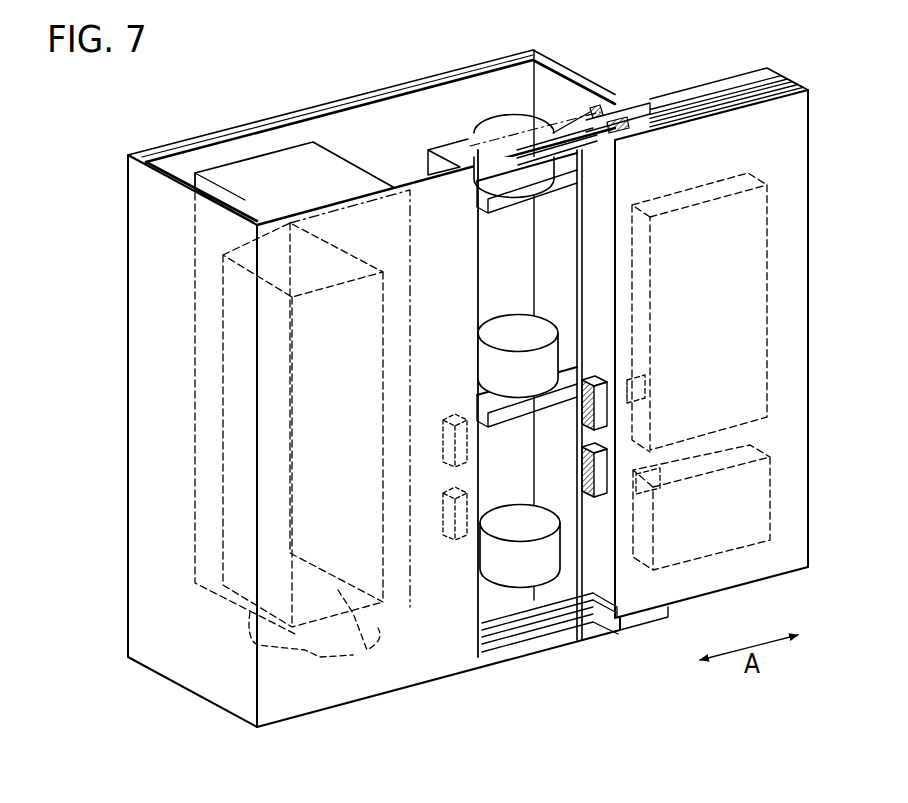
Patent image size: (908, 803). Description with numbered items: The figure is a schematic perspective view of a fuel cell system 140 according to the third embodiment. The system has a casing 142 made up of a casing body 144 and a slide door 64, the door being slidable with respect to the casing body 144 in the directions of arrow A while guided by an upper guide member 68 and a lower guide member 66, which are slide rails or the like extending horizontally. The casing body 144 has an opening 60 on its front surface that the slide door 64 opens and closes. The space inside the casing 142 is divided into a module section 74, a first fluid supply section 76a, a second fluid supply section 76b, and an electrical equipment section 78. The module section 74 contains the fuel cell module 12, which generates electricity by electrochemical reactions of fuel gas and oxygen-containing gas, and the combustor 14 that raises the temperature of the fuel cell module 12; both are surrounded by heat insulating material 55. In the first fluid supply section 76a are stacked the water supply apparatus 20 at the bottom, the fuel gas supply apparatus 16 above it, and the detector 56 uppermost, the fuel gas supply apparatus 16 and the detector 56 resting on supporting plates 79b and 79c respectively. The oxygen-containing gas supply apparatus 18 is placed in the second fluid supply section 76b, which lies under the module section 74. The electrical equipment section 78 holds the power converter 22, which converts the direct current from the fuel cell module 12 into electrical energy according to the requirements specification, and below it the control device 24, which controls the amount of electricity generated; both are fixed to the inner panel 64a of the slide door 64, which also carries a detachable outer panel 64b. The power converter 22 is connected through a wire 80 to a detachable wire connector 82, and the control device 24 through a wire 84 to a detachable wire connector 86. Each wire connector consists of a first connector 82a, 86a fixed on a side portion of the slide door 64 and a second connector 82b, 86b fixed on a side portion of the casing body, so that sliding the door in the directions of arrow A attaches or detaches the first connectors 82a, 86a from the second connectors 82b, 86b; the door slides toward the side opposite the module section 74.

The fuel cell system 140 is at (195, 97).
The casing 142 is at (108, 240).
The casing body 144 is at (467, 67).
The module section 74 is at (262, 147).
The heat insulating material 55 is at (340, 173).
The detector 56 is at (486, 126).
The first fluid supply section 76a is at (553, 84).
The second fluid supply section 76b is at (413, 608).
The guide member 68 is at (563, 108).
The slide door 64 is at (806, 70).
The inner panel 64a is at (718, 70).
The outer panel 64b is at (793, 182).
The electrical equipment section 78 is at (792, 243).
The power converter 22 is at (758, 328).
The control device 24 is at (777, 490).
The wire 80 is at (635, 372).
The wire connector 82 is at (592, 375).
The first connector 82a is at (602, 428).
The second connector 82b is at (443, 421).
The wire 84 is at (638, 473).
The wire connector 86 is at (590, 508).
The first connector 86a is at (602, 520).
The second connector 86b is at (443, 518).
The fuel cell module 12 is at (230, 371).
The combustor 14 is at (367, 652).
The fuel gas supply apparatus 16 is at (500, 330).
The oxygen-containing gas supply apparatus 18 is at (307, 652).
The water supply apparatus 20 is at (510, 516).
The supporting plate 79b is at (490, 402).
The supporting plate 79c is at (507, 213).
The opening 60 is at (527, 598).
The guide member 66 is at (580, 621).